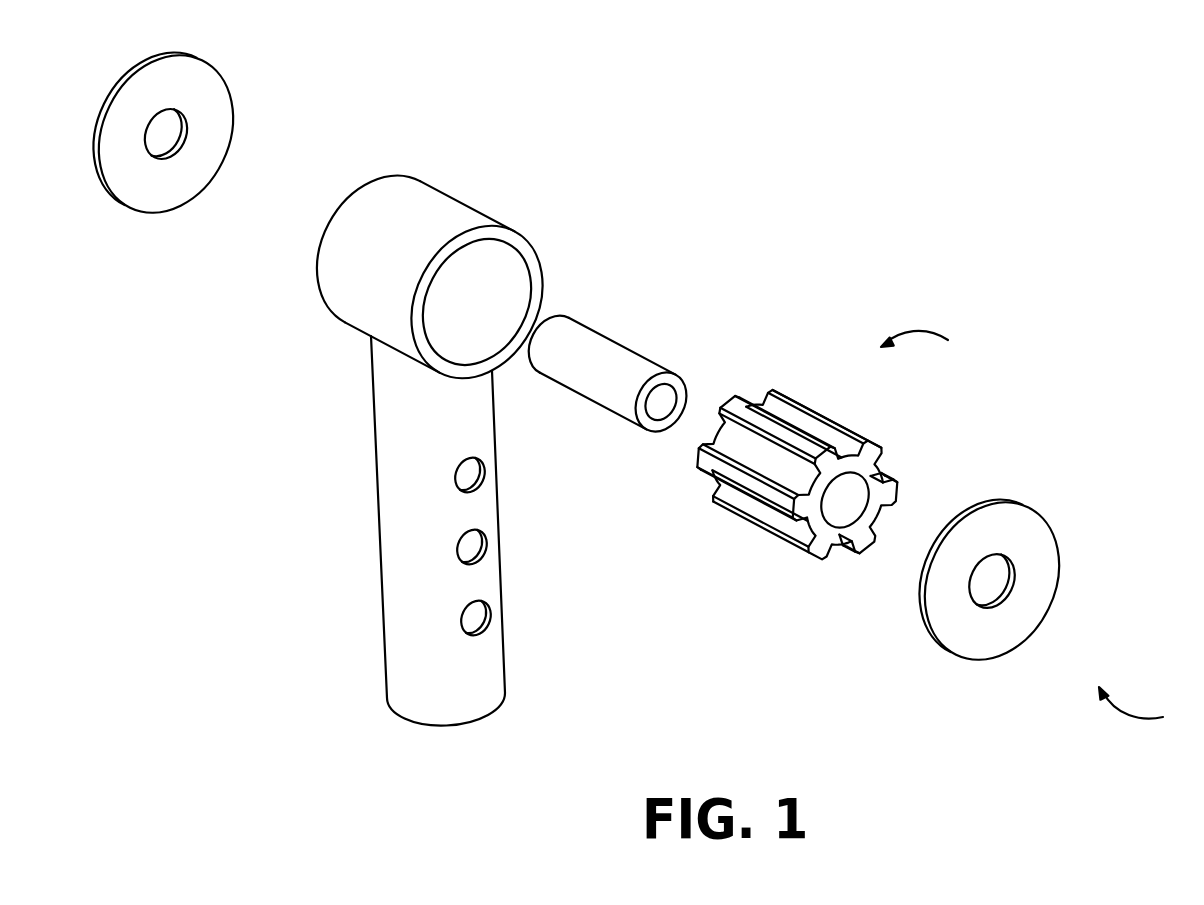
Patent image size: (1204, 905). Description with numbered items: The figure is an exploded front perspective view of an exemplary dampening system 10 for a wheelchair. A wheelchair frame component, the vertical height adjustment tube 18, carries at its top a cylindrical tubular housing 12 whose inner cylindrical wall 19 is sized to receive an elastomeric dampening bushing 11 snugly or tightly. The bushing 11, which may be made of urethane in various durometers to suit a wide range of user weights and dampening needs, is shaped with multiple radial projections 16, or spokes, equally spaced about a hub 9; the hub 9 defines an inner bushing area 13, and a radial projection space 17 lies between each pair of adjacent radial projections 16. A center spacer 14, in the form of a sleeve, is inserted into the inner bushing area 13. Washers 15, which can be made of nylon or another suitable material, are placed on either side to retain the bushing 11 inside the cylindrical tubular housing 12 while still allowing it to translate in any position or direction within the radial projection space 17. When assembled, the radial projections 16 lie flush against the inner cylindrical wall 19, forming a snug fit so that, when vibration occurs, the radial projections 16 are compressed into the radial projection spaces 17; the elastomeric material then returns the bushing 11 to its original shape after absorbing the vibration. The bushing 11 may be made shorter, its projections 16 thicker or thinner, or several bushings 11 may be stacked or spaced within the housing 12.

The hub 9 is at (866, 545).
The dampening system 10 is at (1146, 711).
The elastomeric dampening bushing 11 is at (928, 345).
The cylindrical tubular housing 12 is at (443, 213).
The inner bushing area 13 is at (842, 494).
The center spacer 14 is at (616, 382).
The washers 15 is at (205, 100).
The radial projections 16 is at (757, 487).
The radial projection space 17 is at (832, 555).
The vertical height adjustment tube 18 is at (407, 473).
The inner cylindrical wall 19 is at (488, 287).